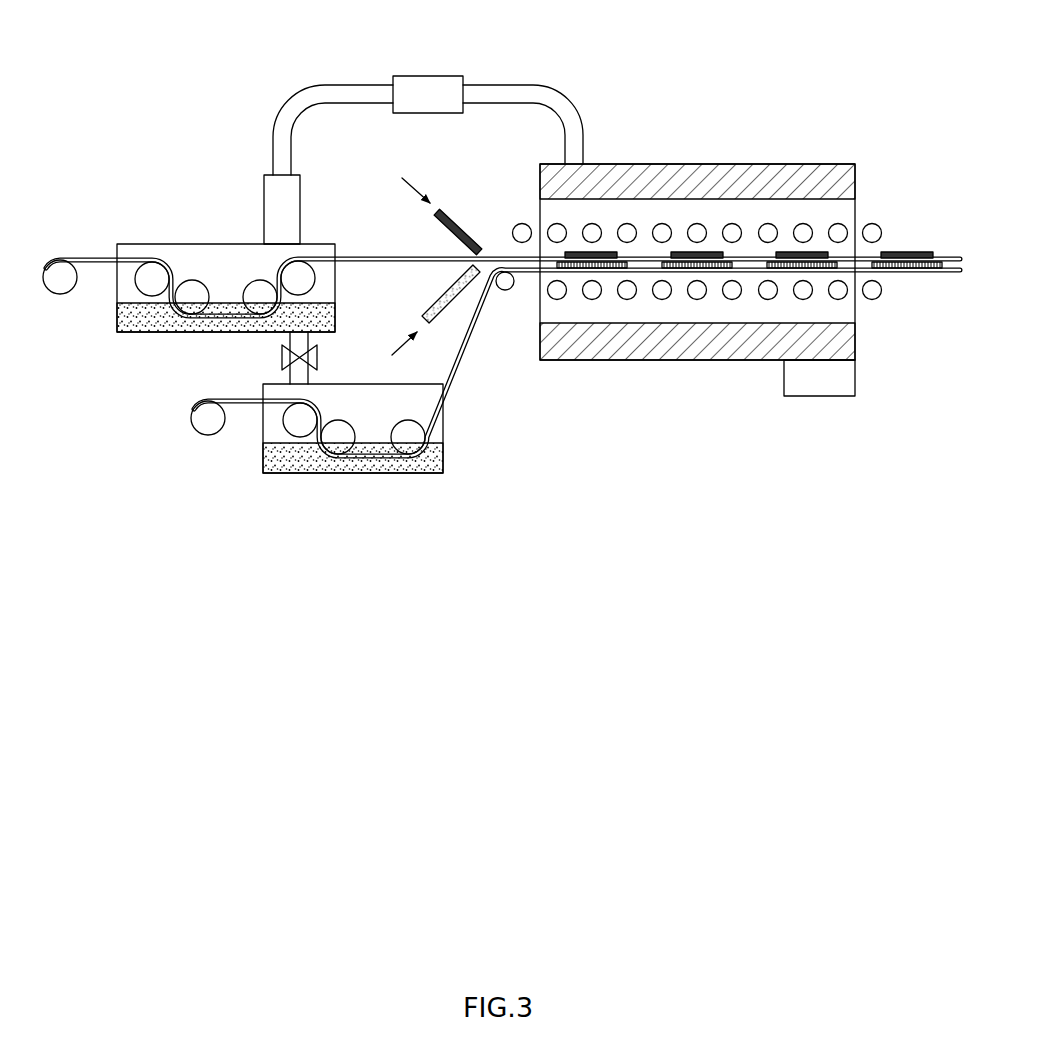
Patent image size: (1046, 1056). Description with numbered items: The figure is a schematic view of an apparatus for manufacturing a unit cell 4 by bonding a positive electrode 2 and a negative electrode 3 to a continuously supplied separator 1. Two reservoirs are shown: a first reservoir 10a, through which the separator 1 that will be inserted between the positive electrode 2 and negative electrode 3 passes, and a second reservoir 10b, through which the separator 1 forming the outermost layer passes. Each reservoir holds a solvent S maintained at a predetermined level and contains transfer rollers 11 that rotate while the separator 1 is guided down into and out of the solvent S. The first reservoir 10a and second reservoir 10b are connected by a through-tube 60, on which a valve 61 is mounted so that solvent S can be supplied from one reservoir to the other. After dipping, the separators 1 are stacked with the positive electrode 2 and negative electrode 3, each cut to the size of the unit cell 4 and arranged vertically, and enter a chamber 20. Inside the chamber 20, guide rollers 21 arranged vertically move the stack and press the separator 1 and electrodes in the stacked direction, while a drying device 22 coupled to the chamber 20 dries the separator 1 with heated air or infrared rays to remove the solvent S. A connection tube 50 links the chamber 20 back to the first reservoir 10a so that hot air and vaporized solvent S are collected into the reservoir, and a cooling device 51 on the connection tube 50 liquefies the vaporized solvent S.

The separator 1 is at (88, 256).
The positive electrode 2 is at (462, 224).
The negative electrode 3 is at (446, 292).
The unit cell 4 is at (913, 237).
The first reservoir 10a is at (155, 243).
The second reservoir 10b is at (447, 438).
The transfer roller 11 is at (150, 279).
The chamber 20 is at (712, 147).
The guide roller 21 is at (802, 228).
The drying device 22 is at (820, 398).
The connection tube 50 is at (495, 85).
The cooling device 51 is at (428, 76).
The through-tube 60 is at (290, 338).
The valve 61 is at (318, 357).
The solvent S is at (145, 322).